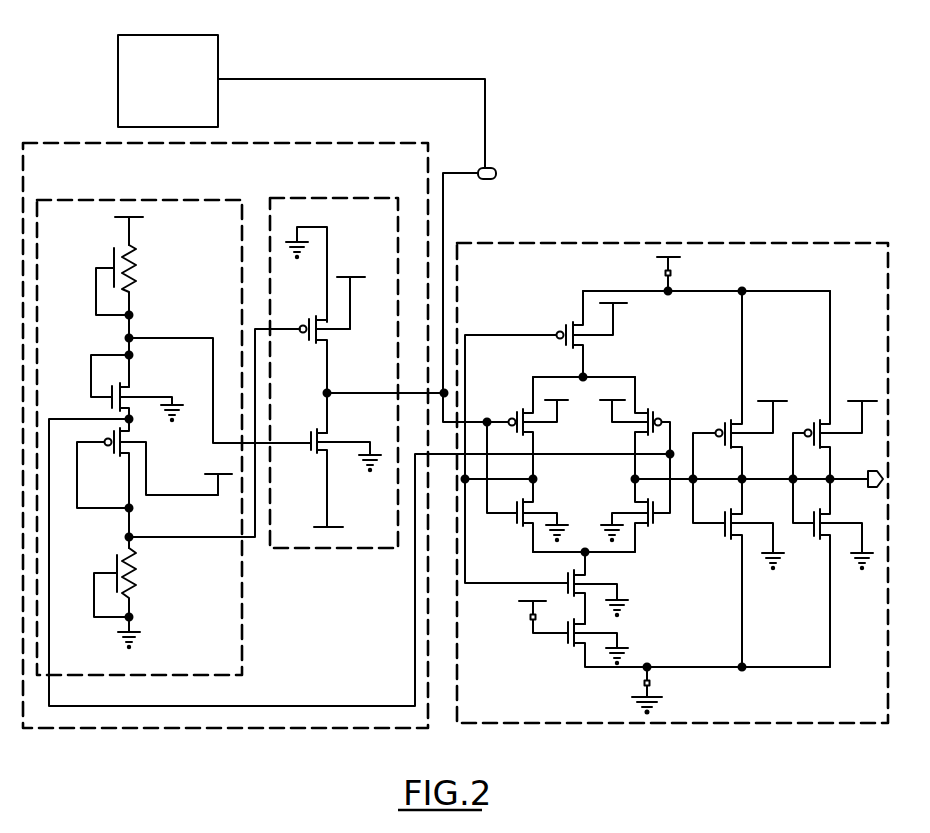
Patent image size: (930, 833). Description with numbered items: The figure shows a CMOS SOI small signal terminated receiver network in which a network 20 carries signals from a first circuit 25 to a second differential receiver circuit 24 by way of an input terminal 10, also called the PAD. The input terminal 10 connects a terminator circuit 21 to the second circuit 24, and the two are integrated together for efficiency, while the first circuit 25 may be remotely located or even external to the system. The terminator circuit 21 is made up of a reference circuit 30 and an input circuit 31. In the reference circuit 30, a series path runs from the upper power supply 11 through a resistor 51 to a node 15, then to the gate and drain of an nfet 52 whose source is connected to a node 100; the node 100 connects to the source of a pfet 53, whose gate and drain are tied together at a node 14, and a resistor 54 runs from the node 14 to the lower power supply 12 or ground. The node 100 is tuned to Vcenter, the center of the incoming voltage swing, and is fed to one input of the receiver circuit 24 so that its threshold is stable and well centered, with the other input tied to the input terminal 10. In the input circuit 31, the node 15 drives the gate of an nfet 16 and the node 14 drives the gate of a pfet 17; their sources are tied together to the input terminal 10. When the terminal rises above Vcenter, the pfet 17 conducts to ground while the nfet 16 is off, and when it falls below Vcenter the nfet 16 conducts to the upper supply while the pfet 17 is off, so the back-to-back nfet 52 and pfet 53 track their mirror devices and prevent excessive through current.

The input terminal 10 is at (492, 167).
The upper power supply 11 is at (118, 217).
The lower power supply 12 is at (145, 642).
The node 14 is at (143, 536).
The node 15 is at (145, 334).
The nfet 16 is at (326, 450).
The pfet 17 is at (324, 333).
The network 20 is at (348, 78).
The terminator circuit 21 is at (338, 140).
The second differential receiver circuit 24 is at (576, 242).
The first circuit 25 is at (184, 94).
The reference circuit 30 is at (151, 195).
The input circuit 31 is at (344, 553).
The resistor 51 is at (137, 313).
The nfet 52 is at (132, 390).
The pfet 53 is at (134, 437).
The resistor 54 is at (136, 584).
The node 100 is at (126, 419).